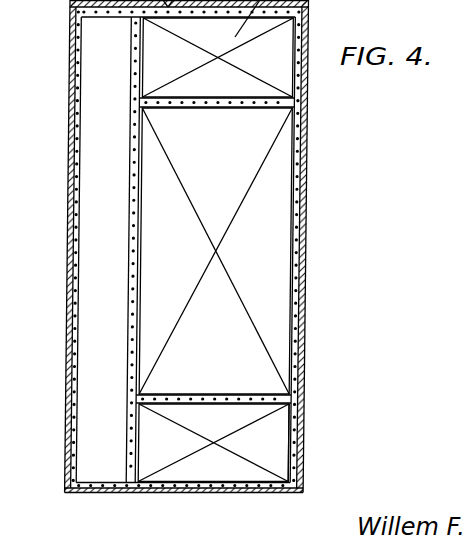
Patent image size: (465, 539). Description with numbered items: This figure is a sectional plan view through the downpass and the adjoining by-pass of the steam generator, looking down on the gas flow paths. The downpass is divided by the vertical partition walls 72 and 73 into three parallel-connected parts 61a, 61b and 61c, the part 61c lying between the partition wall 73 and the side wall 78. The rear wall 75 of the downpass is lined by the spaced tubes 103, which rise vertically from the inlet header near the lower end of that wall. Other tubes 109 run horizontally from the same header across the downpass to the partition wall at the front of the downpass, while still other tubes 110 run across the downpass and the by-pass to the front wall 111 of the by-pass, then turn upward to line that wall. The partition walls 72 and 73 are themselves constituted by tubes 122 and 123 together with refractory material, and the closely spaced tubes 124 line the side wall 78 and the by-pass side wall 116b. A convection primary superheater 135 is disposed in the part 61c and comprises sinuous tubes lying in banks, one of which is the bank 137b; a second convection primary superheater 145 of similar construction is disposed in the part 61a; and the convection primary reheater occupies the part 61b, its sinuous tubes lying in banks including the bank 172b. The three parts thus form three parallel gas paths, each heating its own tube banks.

The downpass part 61a is at (280, 67).
The downpass part 61b is at (270, 256).
The downpass part 61c is at (273, 453).
The partition wall 72 is at (201, 104).
The partition wall 73 is at (174, 394).
The downpass rear wall 75 is at (302, 283).
The side wall 78 is at (255, 492).
The spaced tubes 103 is at (300, 225).
The tubes 109 is at (136, 210).
The tubes 110 is at (77, 198).
The front wall 111 is at (72, 270).
The side wall 116b is at (122, 488).
The tubes 122 is at (258, 103).
The tubes 123 is at (236, 393).
The tubes 124 is at (173, 487).
The convection primary superheater 135 is at (273, 462).
The tube bank 137b is at (230, 472).
The second convection primary superheater 145 is at (287, 42).
The tube bank 172b is at (285, 327).